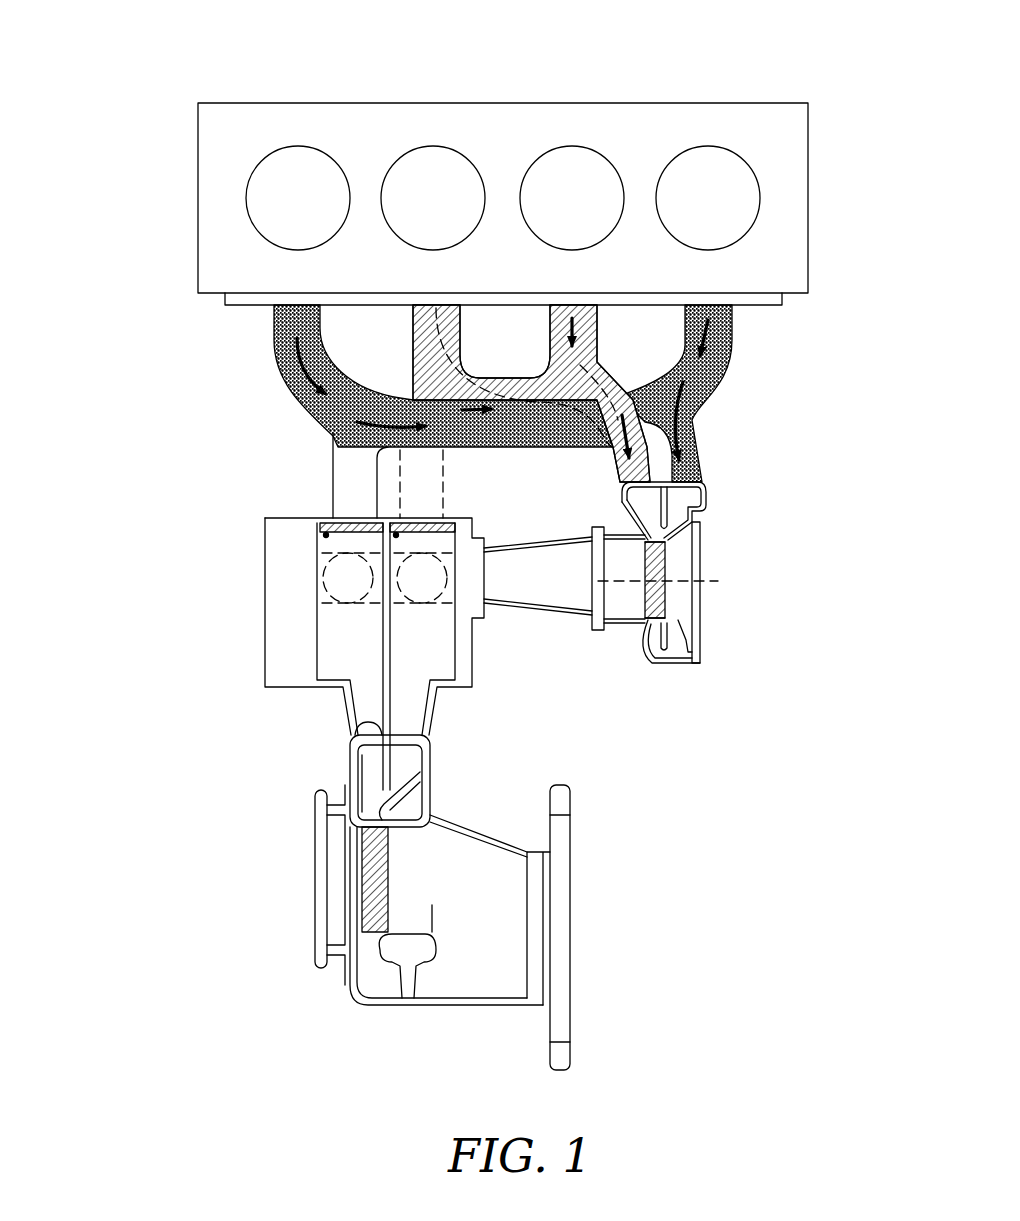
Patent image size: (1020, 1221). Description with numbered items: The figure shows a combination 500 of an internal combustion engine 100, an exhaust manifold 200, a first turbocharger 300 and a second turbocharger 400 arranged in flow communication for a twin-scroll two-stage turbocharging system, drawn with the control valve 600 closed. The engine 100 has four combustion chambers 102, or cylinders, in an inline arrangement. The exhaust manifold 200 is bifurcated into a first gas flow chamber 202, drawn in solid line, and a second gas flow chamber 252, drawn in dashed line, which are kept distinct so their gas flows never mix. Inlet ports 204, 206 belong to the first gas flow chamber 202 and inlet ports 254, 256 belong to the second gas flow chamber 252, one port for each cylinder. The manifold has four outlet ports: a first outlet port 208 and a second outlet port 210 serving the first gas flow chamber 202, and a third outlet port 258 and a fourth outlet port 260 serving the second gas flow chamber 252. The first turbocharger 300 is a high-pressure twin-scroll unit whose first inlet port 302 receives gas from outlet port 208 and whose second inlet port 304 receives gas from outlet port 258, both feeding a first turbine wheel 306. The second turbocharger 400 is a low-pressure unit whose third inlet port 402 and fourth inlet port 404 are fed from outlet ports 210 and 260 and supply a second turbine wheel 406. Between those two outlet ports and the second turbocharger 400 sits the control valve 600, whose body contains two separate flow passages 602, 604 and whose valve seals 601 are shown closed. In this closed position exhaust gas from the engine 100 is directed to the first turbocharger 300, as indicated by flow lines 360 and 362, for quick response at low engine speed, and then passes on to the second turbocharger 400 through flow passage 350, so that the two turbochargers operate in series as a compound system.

The internal combustion engine 100 is at (503, 155).
The combustion chamber 102 is at (433, 146).
The exhaust manifold 200 is at (533, 411).
The first gas flow chamber 202 is at (324, 430).
The inlet port 204 is at (274, 322).
The inlet port 206 is at (730, 330).
The first outlet port 208 is at (695, 462).
The second outlet port 210 is at (333, 482).
The second gas flow chamber 252 is at (406, 390).
The inlet port 254 is at (460, 338).
The inlet port 256 is at (596, 316).
The third outlet port 258 is at (612, 474).
The fourth outlet port 260 is at (444, 487).
The first turbocharger 300 is at (654, 607).
The first inlet port 302 is at (705, 498).
The second inlet port 304 is at (623, 506).
The first turbine wheel 306 is at (668, 597).
The flow passage 350 is at (535, 620).
The flow line 360 is at (300, 376).
The flow line 362 is at (465, 374).
The second turbocharger 400 is at (395, 910).
The third inlet port 402 is at (355, 764).
The fourth inlet port 404 is at (426, 766).
The second turbine wheel 406 is at (362, 880).
The combination 500 is at (168, 124).
The control valve 600 is at (317, 654).
The valve seal 601 is at (420, 560).
The flow passage 602 is at (370, 653).
The flow passage 604 is at (444, 653).